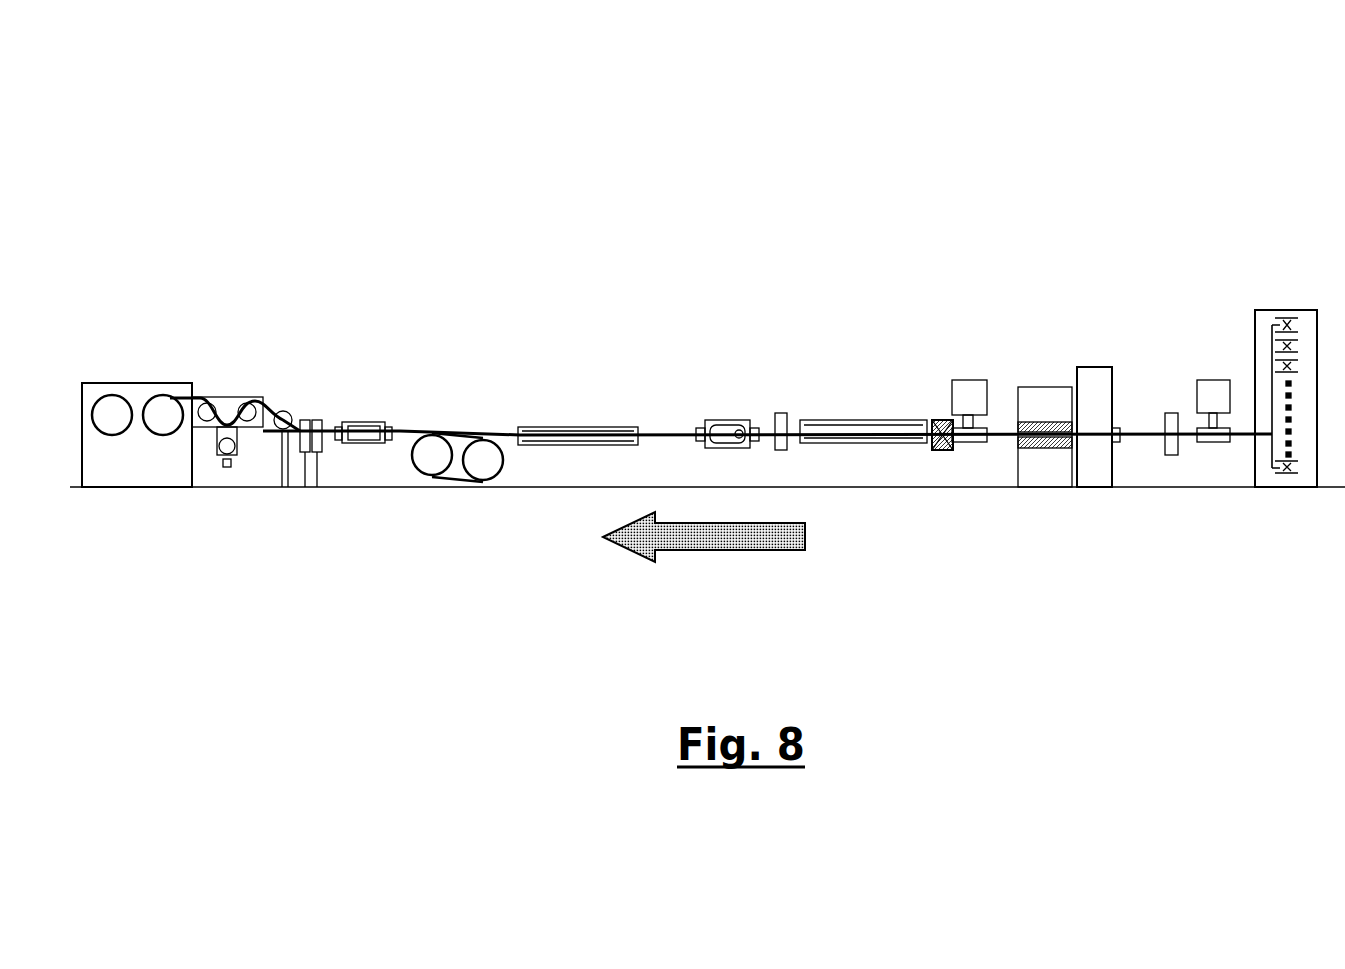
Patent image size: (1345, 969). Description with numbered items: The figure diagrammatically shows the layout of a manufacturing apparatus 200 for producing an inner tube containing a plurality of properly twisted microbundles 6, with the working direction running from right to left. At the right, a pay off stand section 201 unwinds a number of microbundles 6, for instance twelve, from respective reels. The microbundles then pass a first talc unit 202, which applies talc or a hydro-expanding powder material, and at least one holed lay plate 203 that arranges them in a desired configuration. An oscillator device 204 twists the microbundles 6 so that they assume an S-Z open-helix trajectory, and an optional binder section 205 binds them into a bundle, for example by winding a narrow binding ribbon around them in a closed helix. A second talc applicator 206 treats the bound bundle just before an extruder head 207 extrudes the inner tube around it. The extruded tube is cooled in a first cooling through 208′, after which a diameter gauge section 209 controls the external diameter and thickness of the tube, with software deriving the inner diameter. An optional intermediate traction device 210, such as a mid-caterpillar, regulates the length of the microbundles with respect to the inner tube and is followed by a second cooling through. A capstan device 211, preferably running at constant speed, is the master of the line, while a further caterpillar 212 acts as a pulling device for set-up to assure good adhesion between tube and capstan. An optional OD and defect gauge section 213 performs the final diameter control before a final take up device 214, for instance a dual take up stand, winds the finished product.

The manufacturing apparatus 200 is at (762, 258).
The pay off stand section 201 is at (1276, 310).
The first talc unit 202 is at (1212, 380).
The holed lay plate 203 is at (1170, 413).
The oscillator device 204 is at (1096, 367).
The binder section 205 is at (1027, 387).
The second talc applicator 206 is at (963, 380).
The extruder head 207 is at (943, 420).
The first cooling through 208′ is at (868, 420).
The diameter gauge section 209 is at (776, 413).
The intermediate traction device 210 is at (713, 420).
The capstan device 211 is at (449, 433).
The further caterpillar 212 is at (350, 421).
The OD and defect gauge section 213 is at (296, 412).
The final take up device 214 is at (107, 367).
The microbundles 6 is at (1277, 466).